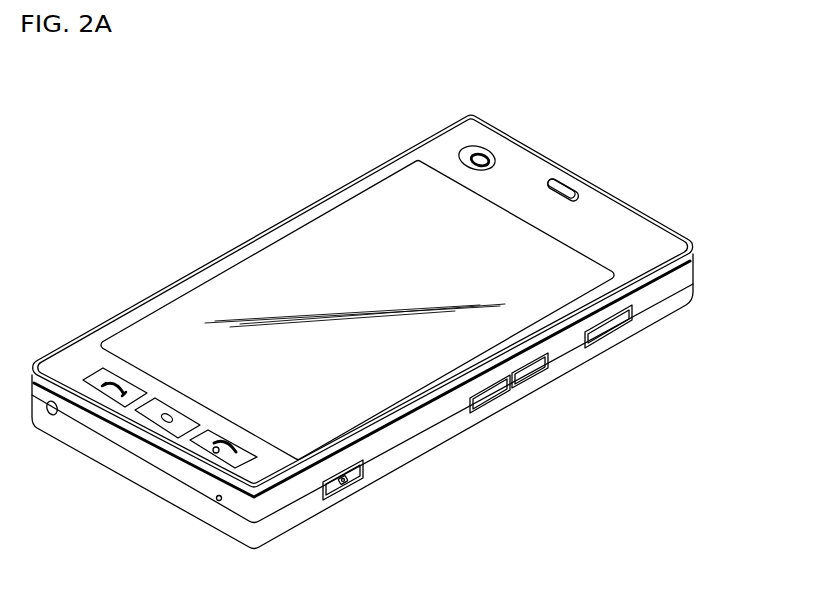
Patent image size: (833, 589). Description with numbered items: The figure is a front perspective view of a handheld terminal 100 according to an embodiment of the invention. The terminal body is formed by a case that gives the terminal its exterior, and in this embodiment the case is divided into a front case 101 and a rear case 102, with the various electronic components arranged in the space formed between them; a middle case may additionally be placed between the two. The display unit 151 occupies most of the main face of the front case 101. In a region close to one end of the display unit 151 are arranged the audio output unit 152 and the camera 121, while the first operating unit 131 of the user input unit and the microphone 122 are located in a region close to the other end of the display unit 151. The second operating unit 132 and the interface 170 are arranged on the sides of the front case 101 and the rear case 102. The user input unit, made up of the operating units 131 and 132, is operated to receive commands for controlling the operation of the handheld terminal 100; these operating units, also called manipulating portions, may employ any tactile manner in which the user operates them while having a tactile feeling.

The handheld terminal 100 is at (332, 181).
The front case 101 is at (688, 268).
The rear case 102 is at (690, 292).
The camera 121 is at (482, 158).
The microphone 122 is at (217, 501).
The operating unit 131 is at (98, 381).
The operating unit 132 is at (490, 398).
The display unit 151 is at (258, 265).
The audio output unit 152 is at (568, 188).
The interface 170 is at (606, 333).